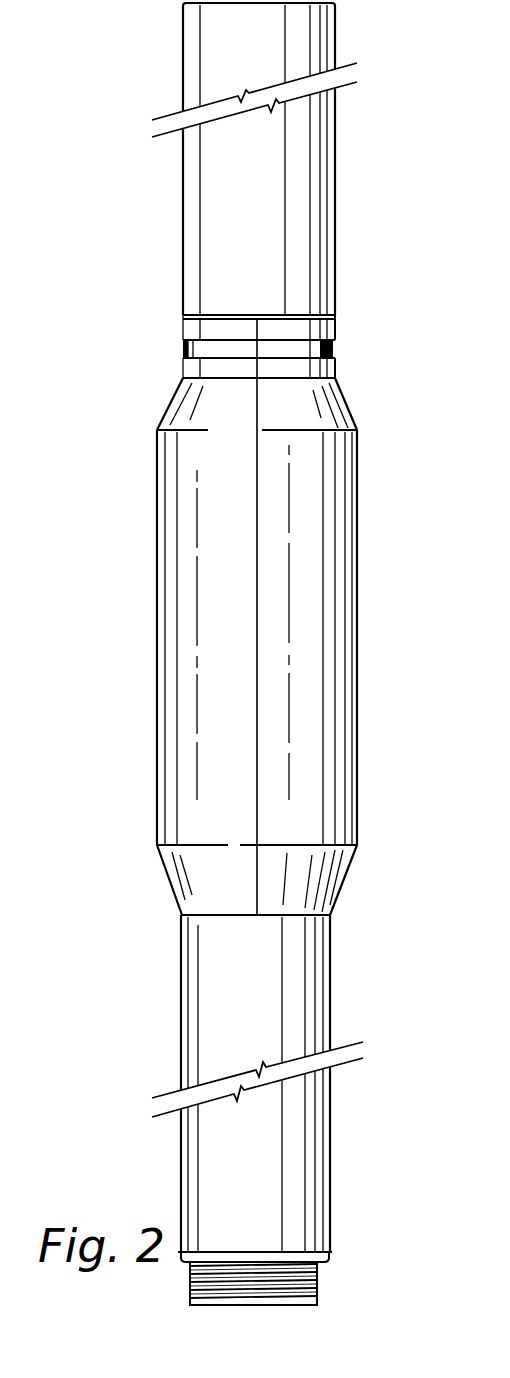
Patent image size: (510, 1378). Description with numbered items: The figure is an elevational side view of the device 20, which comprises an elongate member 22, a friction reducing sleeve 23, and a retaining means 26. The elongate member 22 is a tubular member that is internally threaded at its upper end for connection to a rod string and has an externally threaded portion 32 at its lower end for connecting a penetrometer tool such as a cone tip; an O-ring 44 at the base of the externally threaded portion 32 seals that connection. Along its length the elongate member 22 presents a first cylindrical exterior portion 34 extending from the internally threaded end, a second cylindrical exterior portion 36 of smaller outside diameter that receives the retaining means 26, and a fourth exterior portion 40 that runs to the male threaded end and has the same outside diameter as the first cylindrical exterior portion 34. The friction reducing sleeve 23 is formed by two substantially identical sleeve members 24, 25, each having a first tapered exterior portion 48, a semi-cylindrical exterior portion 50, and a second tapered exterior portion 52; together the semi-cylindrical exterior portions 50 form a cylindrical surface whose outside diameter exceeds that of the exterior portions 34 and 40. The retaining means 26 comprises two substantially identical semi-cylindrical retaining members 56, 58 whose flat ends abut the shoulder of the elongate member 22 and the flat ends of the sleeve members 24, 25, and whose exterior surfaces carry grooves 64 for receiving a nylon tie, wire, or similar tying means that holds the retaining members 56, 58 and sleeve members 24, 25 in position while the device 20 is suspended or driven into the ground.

The device 20 is at (158, 84).
The elongate member 22 is at (210, 236).
The friction reducing sleeve 23 is at (155, 605).
The sleeve member 24 is at (190, 508).
The sleeve member 25 is at (328, 505).
The retaining means 26 is at (335, 325).
The externally threaded portion 32 is at (318, 1296).
The first cylindrical exterior portion 34 is at (335, 165).
The second cylindrical exterior portion 36 is at (178, 325).
The fourth exterior portion 40 is at (180, 1005).
The O-ring 44 is at (322, 1262).
The first tapered exterior portion 48 is at (167, 403).
The semi-cylindrical exterior portion 50 is at (183, 735).
The second tapered exterior portion 52 is at (168, 880).
The semi-cylindrical retaining member 56 is at (183, 368).
The semi-cylindrical retaining member 58 is at (335, 368).
The grooves 64 is at (185, 352).